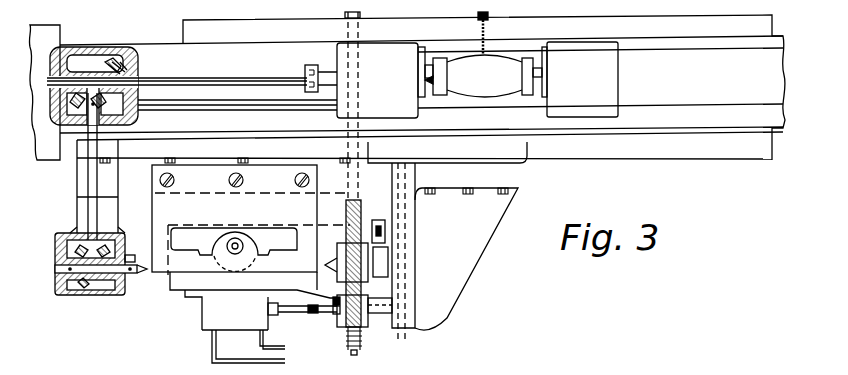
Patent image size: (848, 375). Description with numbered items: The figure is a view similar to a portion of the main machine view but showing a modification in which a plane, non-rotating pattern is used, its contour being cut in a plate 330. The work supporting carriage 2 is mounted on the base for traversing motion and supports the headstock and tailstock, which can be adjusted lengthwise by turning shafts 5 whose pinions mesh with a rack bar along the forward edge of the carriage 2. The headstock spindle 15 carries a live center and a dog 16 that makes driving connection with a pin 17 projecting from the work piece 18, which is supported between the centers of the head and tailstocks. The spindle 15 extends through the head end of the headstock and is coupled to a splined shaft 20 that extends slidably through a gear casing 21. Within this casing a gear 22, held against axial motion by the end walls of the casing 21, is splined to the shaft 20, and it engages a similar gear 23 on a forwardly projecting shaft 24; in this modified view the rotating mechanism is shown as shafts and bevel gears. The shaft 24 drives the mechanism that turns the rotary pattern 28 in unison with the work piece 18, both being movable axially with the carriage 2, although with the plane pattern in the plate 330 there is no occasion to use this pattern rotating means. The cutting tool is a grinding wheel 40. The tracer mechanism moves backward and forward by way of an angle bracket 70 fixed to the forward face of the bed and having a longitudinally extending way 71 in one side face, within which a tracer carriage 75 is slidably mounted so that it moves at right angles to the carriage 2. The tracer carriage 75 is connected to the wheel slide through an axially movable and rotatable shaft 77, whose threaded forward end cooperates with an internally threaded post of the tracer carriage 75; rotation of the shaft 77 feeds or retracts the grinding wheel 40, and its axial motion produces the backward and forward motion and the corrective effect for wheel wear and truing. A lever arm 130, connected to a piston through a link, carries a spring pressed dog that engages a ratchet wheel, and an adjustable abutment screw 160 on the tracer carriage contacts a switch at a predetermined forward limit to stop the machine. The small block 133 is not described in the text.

The work supporting carriage 2 is at (750, 120).
The shaft 5 is at (325, 72).
The spindle 15 is at (427, 80).
The dog 16 is at (426, 63).
The pin 17 is at (437, 67).
The work piece 18 is at (497, 88).
The splined shaft 20 is at (247, 78).
The gear casing 21 is at (123, 37).
The spiral gear 22 is at (140, 69).
The gear 23 is at (130, 115).
The shaft 24 is at (90, 208).
The rotary pattern 28 is at (362, 343).
The grinding wheel 40 is at (487, 32).
The angle bracket 70 is at (443, 312).
The way 71 is at (402, 338).
The tracer carriage 75 is at (340, 325).
The shaft 77 is at (353, 95).
The lever arm 130 is at (335, 315).
The stop block 133 is at (338, 298).
The adjustable abutment screw 160 is at (385, 228).
The plate 330 is at (200, 228).